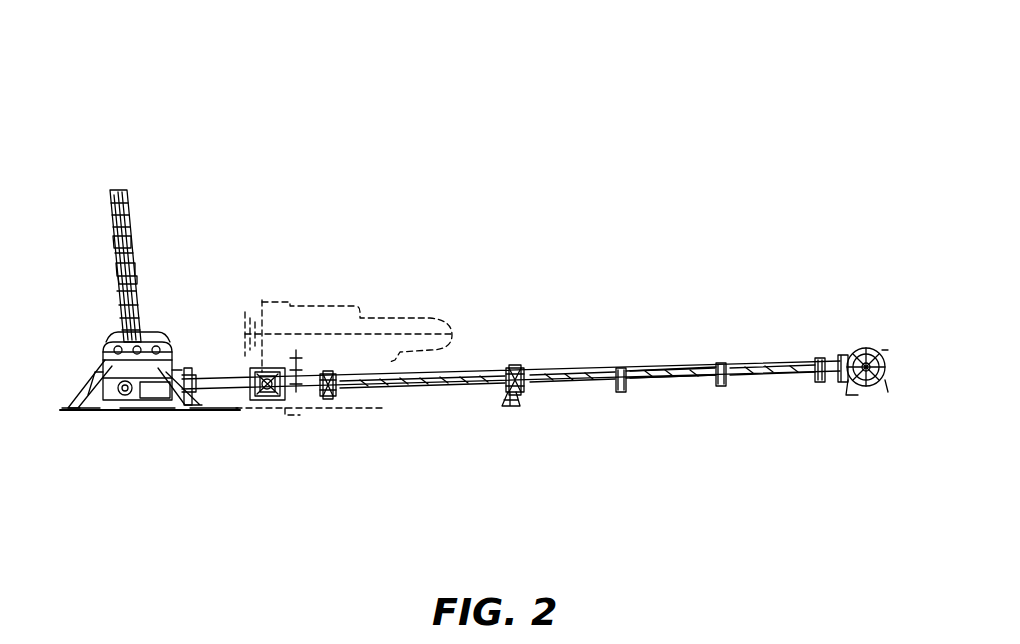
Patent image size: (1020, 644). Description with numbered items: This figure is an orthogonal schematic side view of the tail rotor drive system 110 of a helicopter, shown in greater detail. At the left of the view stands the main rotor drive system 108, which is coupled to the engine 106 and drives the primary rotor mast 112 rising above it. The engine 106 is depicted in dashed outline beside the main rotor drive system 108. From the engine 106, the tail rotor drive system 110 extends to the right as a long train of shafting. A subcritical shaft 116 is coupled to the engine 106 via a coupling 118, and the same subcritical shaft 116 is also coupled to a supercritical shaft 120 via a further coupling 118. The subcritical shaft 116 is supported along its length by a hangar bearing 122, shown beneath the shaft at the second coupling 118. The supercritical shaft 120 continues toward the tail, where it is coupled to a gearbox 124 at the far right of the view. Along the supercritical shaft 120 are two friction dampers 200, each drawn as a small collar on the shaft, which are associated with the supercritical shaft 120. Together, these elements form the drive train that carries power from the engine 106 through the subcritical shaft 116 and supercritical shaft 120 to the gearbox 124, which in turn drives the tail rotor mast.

The tail rotor drive system 110 is at (532, 242).
The primary rotor mast 112 is at (135, 283).
The main rotor drive system 108 is at (204, 372).
The engine 106 is at (332, 298).
The subcritical shaft 116 is at (386, 388).
The coupling 118 is at (520, 370).
The hangar bearing 122 is at (503, 398).
The friction damper 200 is at (714, 392).
The supercritical shaft 120 is at (662, 368).
The gearbox 124 is at (856, 345).